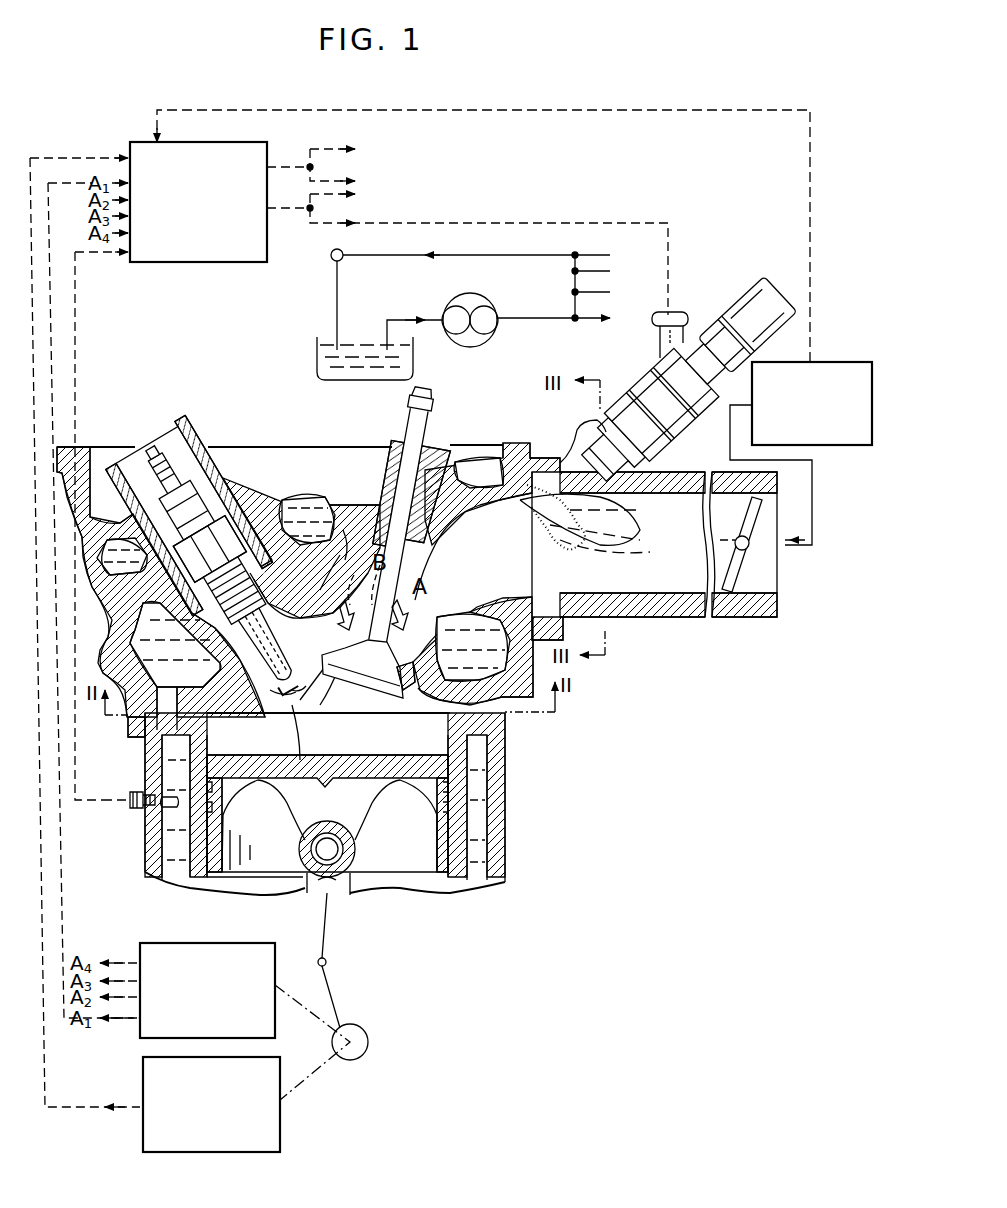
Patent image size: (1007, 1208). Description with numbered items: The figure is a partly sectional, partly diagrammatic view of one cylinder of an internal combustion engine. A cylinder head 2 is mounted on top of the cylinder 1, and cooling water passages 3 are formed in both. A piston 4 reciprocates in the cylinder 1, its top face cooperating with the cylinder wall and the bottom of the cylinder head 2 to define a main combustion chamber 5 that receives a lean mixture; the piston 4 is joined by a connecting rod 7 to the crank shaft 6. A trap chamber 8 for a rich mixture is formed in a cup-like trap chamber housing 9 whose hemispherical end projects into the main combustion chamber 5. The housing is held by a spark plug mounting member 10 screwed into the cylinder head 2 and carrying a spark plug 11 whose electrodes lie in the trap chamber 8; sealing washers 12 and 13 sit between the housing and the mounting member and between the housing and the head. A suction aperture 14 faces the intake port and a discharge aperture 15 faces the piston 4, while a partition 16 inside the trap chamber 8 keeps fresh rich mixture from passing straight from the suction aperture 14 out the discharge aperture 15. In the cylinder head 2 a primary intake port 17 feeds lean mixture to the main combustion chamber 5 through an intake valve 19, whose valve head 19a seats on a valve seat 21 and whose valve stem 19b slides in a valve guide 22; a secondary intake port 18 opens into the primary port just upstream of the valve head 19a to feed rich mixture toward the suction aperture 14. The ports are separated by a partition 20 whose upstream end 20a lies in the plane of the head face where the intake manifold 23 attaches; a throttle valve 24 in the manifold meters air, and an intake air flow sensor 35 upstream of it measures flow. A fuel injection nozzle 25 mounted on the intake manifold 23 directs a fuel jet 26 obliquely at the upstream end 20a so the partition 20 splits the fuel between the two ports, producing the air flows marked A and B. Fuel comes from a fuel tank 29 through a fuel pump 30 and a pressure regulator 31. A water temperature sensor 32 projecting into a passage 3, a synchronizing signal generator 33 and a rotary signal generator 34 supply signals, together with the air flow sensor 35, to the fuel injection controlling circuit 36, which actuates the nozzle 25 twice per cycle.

The cylinder 1 is at (488, 800).
The cylinder head 2 is at (530, 700).
The cooling water passages 3 is at (118, 616).
The piston 4 is at (423, 870).
The main combustion chamber 5 is at (500, 714).
The crank shaft 6 is at (362, 1030).
The connecting rod 7 is at (327, 920).
The trap chamber 8 is at (262, 652).
The trap chamber housing 9 is at (296, 676).
The spark plug mounting member 10 is at (196, 424).
The spark plug 11 is at (166, 448).
The sealing washer 12 is at (300, 600).
The sealing washer 13 is at (323, 585).
The suction aperture 14 is at (326, 683).
The discharge aperture 15 is at (285, 688).
The partition 16 is at (292, 705).
The primary intake port 17 is at (519, 656).
The secondary intake port 18 is at (455, 510).
The intake valve 19 is at (370, 645).
The valve head 19a is at (440, 712).
The valve stem 19b is at (413, 425).
The partition 20 is at (348, 530).
The upstream end 20a is at (470, 505).
The valve seat 21 is at (425, 685).
The valve guide 22 is at (383, 475).
The intake manifold 23 is at (682, 474).
The throttle valve 24 is at (745, 535).
The fuel injection nozzle 25 is at (600, 395).
The fuel jet 26 is at (545, 512).
The fuel tank 29 is at (318, 364).
The fuel pump 30 is at (492, 300).
The pressure regulator 31 is at (331, 258).
The water temperature sensor 32 is at (132, 790).
The synchronizing signal generator 33 is at (224, 943).
The rotary signal generator 34 is at (281, 1125).
The intake air flow sensor 35 is at (850, 447).
The fuel injection controlling circuit 36 is at (265, 258).